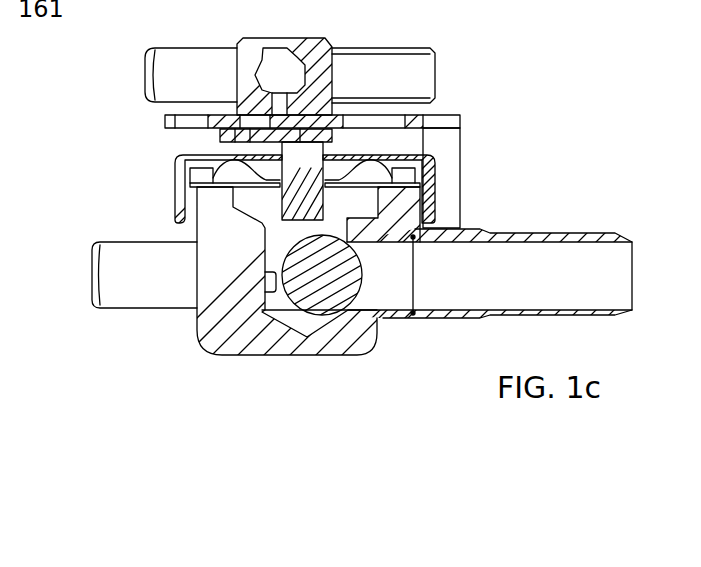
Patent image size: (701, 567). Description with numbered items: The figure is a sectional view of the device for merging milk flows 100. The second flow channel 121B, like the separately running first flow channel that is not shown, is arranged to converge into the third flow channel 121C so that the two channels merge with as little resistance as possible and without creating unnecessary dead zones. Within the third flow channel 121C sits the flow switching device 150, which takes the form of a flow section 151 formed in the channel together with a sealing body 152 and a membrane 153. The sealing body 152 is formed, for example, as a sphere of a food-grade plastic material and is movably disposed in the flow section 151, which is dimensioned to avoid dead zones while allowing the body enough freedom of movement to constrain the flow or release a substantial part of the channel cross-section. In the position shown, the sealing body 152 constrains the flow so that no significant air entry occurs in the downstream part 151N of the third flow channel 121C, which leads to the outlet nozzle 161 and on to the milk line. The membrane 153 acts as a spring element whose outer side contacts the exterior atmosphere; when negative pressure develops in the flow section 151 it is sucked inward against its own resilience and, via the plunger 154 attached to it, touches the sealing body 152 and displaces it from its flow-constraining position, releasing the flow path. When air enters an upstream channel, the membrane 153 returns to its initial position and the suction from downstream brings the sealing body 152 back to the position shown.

The device for merging milk flows 100 is at (468, 56).
The flow switching device 150 is at (388, 153).
The flow section 151 is at (222, 348).
The part of flow channel downstream of flow section 151N is at (397, 272).
The sealing body 152 is at (347, 282).
The membrane 153 is at (176, 182).
The plunger 154 is at (421, 211).
The outlet nozzle 161 is at (625, 278).
The second flow channel 121B is at (198, 230).
The third flow channel 121C is at (270, 278).